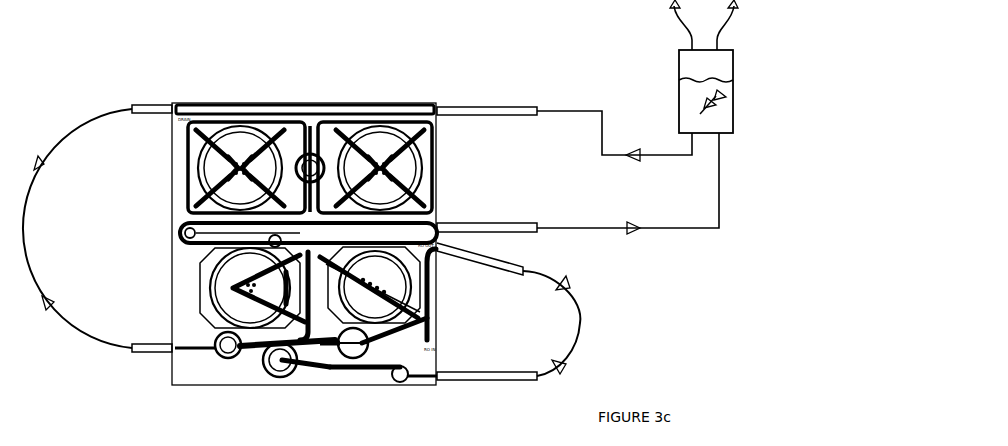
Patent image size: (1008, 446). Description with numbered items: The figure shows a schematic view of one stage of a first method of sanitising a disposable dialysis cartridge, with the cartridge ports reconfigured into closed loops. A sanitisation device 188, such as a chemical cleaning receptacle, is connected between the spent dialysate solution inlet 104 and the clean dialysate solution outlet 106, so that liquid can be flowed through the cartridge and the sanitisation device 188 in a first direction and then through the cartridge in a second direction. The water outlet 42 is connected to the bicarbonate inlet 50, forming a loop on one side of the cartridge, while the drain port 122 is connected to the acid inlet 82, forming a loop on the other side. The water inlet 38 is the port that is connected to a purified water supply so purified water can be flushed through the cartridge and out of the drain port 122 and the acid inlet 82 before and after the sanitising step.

The drain port 122 is at (171, 106).
The spent dialysate solution inlet 104 is at (440, 105).
The clean dialysate solution outlet 106 is at (440, 222).
The water outlet 42 is at (440, 252).
The water inlet 38 is at (428, 328).
The bicarbonate inlet 50 is at (440, 374).
The acid inlet 82 is at (171, 345).
The sanitisation device 188 is at (707, 112).